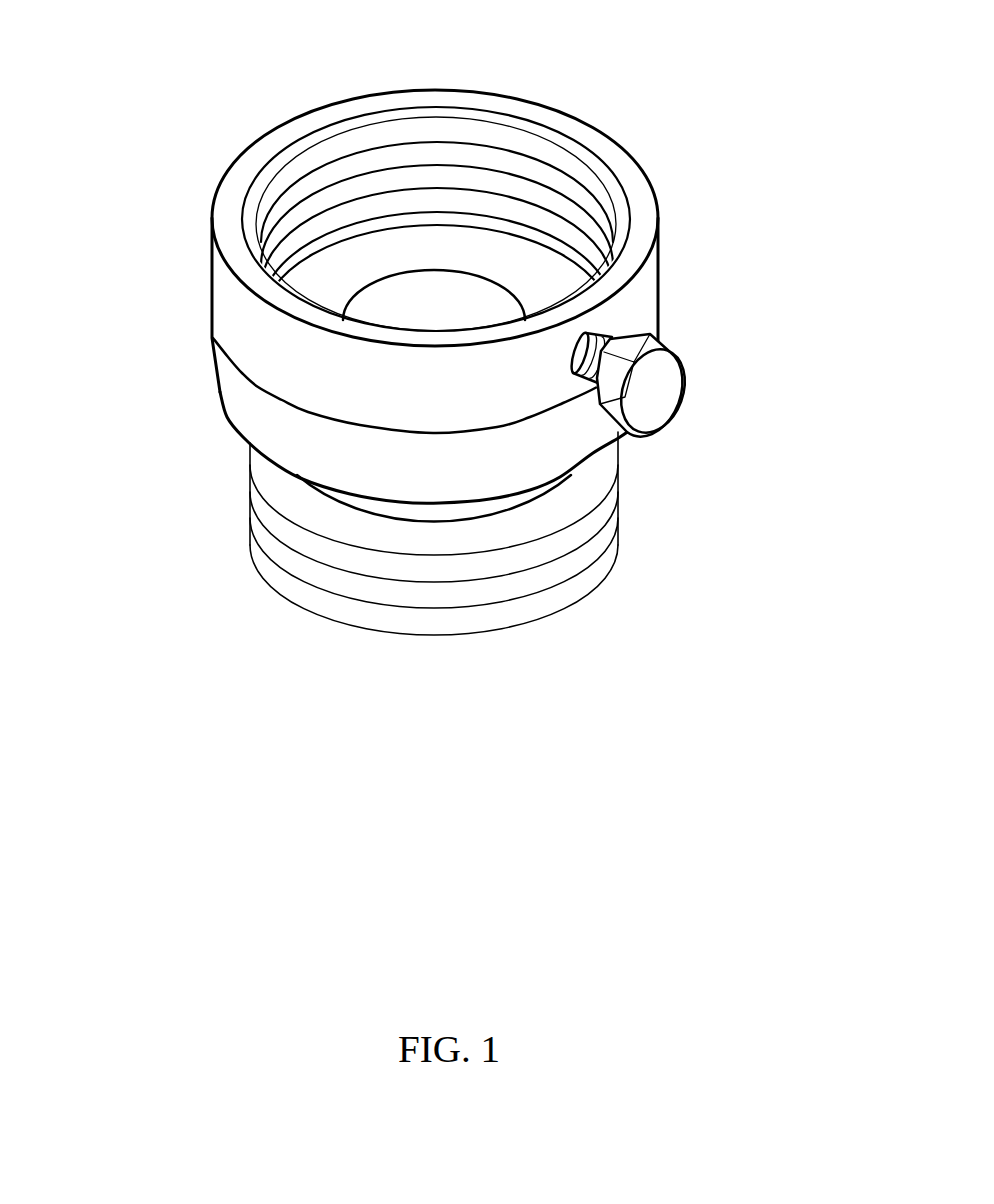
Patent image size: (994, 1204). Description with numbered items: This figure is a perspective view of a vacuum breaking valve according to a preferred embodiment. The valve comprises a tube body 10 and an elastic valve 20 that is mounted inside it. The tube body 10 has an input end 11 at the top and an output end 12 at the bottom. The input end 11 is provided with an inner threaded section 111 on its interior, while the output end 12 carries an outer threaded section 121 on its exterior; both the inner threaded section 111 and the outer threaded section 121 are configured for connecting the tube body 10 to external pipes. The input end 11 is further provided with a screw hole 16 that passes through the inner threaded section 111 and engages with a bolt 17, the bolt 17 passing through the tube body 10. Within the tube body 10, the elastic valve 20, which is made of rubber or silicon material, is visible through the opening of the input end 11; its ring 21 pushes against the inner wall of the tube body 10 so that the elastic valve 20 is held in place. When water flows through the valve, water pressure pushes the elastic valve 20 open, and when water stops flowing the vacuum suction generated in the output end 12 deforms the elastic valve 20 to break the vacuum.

The tube body 10 is at (208, 431).
The input end 11 is at (576, 130).
The inner threaded section 111 is at (348, 150).
The elastic valve 20 is at (324, 239).
The ring 21 is at (562, 290).
The screw hole 16 is at (597, 343).
The bolt 17 is at (657, 398).
The output end 12 is at (447, 635).
The outer threaded section 121 is at (597, 520).